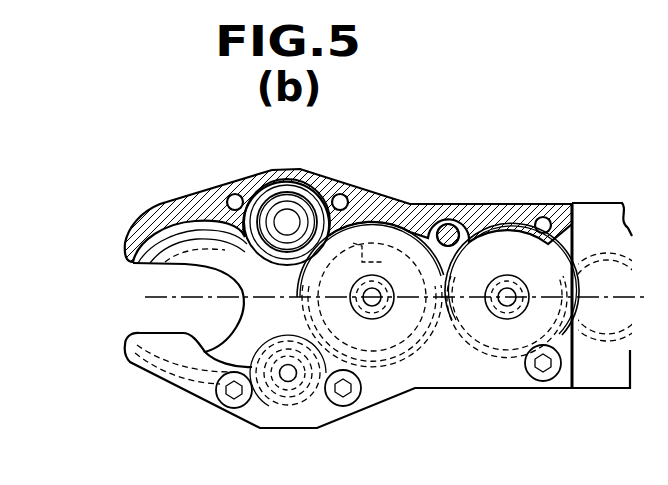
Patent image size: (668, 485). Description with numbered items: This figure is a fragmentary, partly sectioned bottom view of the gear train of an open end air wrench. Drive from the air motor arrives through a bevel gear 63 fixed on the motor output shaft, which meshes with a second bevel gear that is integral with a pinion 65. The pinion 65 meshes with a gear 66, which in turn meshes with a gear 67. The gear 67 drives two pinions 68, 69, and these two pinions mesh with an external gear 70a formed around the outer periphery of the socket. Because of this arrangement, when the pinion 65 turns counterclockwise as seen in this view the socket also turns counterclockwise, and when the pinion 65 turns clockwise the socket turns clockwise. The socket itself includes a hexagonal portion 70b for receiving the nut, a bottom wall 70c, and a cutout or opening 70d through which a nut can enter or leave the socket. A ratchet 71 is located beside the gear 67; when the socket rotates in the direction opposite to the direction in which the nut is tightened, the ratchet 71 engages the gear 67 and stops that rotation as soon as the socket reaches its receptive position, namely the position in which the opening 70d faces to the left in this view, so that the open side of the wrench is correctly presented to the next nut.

The bevel gear 63 is at (562, 14).
The pinion 65 is at (600, 336).
The gear 66 is at (508, 233).
The gear 67 is at (383, 223).
The pinion 68 is at (304, 178).
The pinion 69 is at (297, 410).
The external gear 70a is at (180, 220).
The hexagonal portion 70b is at (216, 263).
The bottom wall 70c is at (190, 258).
The cutout or opening 70d is at (143, 333).
The ratchet 71 is at (423, 215).